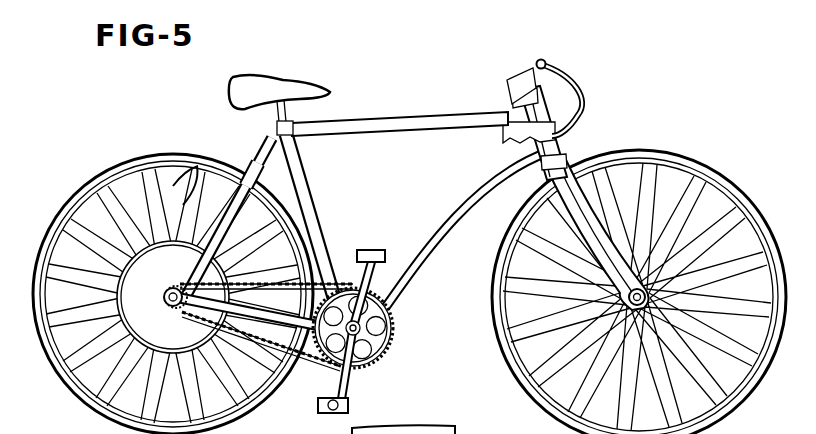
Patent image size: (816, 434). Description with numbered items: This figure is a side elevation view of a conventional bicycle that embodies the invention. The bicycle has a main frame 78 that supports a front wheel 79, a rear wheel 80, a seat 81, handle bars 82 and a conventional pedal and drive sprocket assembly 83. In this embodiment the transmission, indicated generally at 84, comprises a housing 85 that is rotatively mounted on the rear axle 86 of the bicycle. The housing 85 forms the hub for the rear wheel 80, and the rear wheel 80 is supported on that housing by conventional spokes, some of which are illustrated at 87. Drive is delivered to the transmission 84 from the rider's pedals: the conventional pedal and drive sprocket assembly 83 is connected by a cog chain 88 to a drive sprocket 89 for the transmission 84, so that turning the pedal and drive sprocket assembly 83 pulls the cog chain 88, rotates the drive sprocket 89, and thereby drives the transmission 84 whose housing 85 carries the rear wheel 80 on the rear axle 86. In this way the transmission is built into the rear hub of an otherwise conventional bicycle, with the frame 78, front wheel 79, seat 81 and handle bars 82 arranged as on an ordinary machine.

The main frame 78 is at (397, 123).
The front wheel 79 is at (668, 155).
The rear wheel 80 is at (92, 186).
The seat 81 is at (287, 85).
The handle bars 82 is at (560, 84).
The pedal and drive sprocket assembly 83 is at (388, 338).
The transmission 84 is at (163, 358).
The housing 85 is at (190, 340).
The rear axle 86 is at (171, 308).
The spokes 87 is at (198, 172).
The cog chain 88 is at (270, 284).
The drive sprocket 89 is at (168, 290).